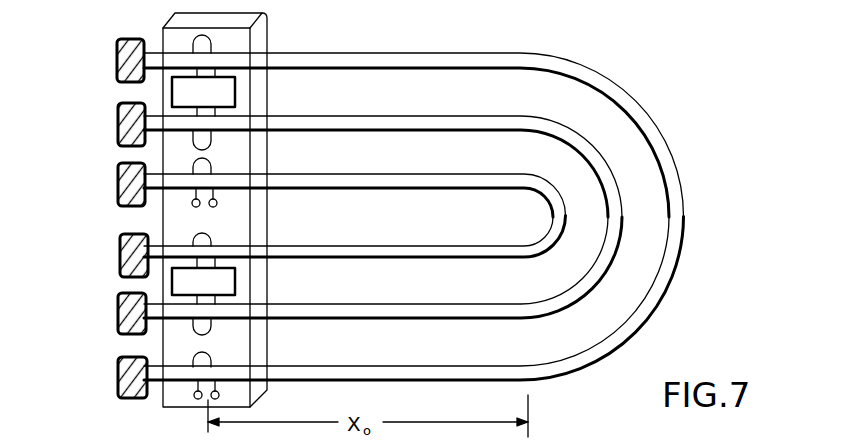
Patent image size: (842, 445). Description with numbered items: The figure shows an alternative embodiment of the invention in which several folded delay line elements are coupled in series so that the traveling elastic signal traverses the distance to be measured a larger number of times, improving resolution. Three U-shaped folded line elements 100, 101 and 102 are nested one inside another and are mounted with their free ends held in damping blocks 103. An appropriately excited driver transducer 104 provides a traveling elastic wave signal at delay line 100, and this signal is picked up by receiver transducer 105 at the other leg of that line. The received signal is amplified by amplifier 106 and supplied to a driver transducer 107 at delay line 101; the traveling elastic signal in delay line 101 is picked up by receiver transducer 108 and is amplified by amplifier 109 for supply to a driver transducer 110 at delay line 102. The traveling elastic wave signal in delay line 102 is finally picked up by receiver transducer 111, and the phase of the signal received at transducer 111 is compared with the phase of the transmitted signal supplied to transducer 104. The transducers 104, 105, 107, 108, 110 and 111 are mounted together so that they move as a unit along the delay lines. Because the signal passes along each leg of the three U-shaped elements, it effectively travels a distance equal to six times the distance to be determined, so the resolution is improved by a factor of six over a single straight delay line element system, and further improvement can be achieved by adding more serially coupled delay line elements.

The U-shaped folded delay line element 100 is at (538, 198).
The U-shaped folded delay line element 101 is at (577, 145).
The U-shaped folded delay line element 102 is at (592, 83).
The damping blocks 103 is at (117, 260).
The driver transducer 104 is at (210, 167).
The receiver transducer 105 is at (210, 237).
The amplifier 106 is at (235, 286).
The driver transducer 107 is at (212, 332).
The receiver transducer 108 is at (210, 143).
The amplifier 109 is at (235, 95).
The driver transducer 110 is at (210, 45).
The receiver transducer 111 is at (212, 358).